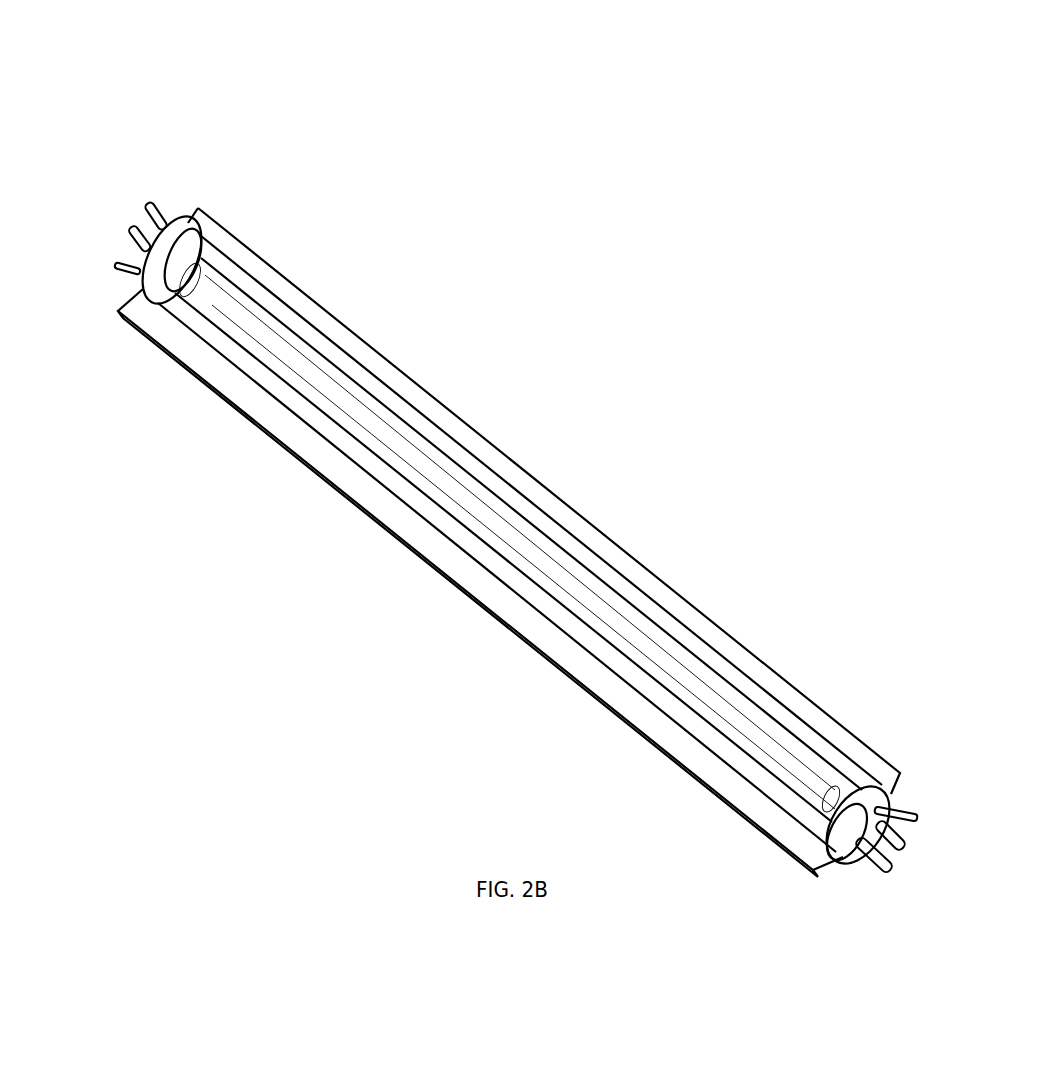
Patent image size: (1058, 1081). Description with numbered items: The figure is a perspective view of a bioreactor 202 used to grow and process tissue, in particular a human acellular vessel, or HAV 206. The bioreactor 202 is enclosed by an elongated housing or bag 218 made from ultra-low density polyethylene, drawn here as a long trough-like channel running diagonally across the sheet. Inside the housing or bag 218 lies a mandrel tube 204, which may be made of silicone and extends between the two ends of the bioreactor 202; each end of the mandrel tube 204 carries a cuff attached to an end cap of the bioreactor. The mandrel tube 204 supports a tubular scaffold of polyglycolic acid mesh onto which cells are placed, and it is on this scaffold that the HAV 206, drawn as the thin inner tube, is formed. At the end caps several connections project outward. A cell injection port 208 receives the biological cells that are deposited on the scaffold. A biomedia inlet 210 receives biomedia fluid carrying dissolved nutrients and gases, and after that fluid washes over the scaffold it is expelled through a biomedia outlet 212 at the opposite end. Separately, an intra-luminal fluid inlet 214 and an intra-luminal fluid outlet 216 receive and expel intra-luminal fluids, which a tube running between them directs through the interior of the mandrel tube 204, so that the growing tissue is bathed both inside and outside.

The bioreactor 202 is at (162, 100).
The mandrel tube 204 is at (360, 397).
The HAV 206 is at (680, 650).
The cell injection port 208 is at (104, 268).
The biomedia inlet 210 is at (136, 193).
The biomedia outlet 212 is at (923, 852).
The intra-luminal fluid inlet 214 is at (111, 225).
The intra-luminal fluid outlet 216 is at (903, 879).
The housing or bag 218 is at (540, 494).